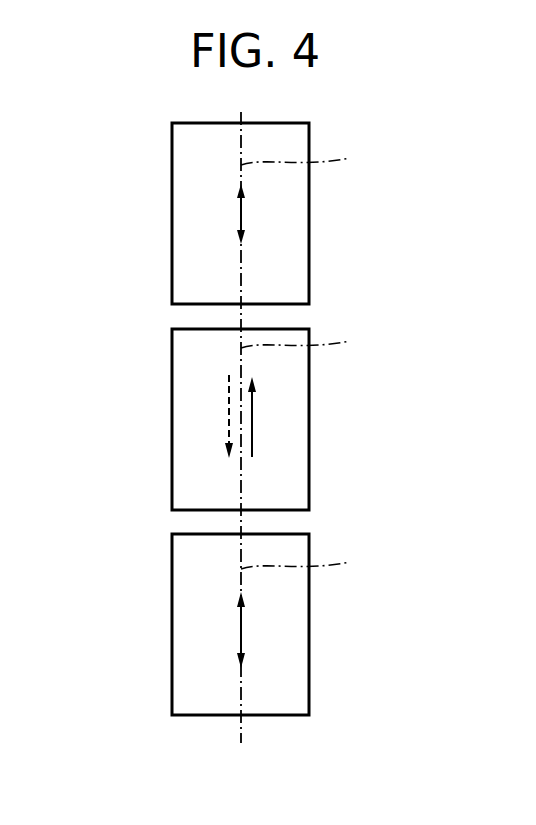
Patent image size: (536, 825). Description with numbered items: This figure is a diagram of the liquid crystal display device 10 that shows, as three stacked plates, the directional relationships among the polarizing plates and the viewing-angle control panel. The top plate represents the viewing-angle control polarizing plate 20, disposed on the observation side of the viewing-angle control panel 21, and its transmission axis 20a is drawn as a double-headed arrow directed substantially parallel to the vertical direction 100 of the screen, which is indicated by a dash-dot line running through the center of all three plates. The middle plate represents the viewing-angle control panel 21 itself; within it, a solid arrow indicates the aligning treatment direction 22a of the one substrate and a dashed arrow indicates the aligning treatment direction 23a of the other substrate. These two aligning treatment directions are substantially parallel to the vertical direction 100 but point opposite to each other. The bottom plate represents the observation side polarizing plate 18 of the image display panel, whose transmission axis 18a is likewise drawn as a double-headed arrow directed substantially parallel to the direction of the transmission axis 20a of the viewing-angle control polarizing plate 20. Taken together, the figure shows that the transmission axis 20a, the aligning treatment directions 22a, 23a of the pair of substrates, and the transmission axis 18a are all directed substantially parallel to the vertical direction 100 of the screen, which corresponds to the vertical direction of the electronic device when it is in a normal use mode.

The liquid crystal display device 10 is at (315, 556).
The observation side polarizing plate 18 is at (310, 655).
The transmission axis of the observation side polarizing plate 18a is at (241, 625).
The viewing-angle control polarizing plate 20 is at (310, 246).
The transmission axis of the viewing-angle control polarizing plate 20a is at (241, 215).
The viewing-angle control panel 21 is at (310, 408).
The aligning treatment direction of the one substrate 22a is at (252, 442).
The aligning treatment direction of the other substrate 23a is at (229, 415).
The vertical direction of the screen 100 is at (323, 246).